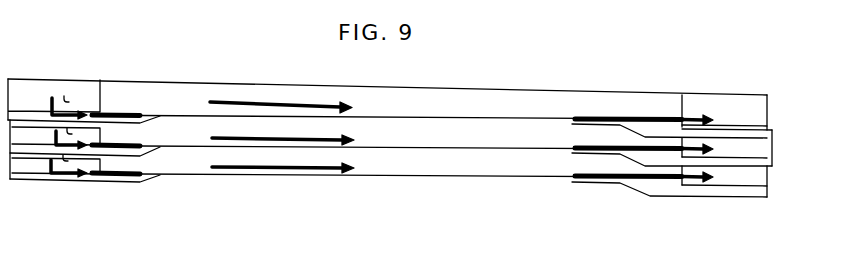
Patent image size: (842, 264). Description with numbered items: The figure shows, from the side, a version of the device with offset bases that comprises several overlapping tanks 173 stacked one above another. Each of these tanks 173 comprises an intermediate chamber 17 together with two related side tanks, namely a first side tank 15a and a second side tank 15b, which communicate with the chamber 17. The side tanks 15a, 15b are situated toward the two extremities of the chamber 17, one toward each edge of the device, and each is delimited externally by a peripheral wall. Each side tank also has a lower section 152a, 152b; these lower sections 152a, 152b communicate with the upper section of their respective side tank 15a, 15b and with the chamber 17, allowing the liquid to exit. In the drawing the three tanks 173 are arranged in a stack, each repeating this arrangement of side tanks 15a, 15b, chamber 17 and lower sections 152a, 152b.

The first side tank 15a is at (34, 89).
The second side tank 15b is at (734, 112).
The intermediate chamber 17 is at (285, 98).
The overlapping tanks 173 is at (463, 102).
The lower section of the first side tank 152a is at (42, 176).
The lower section of the second side tank 152b is at (727, 163).